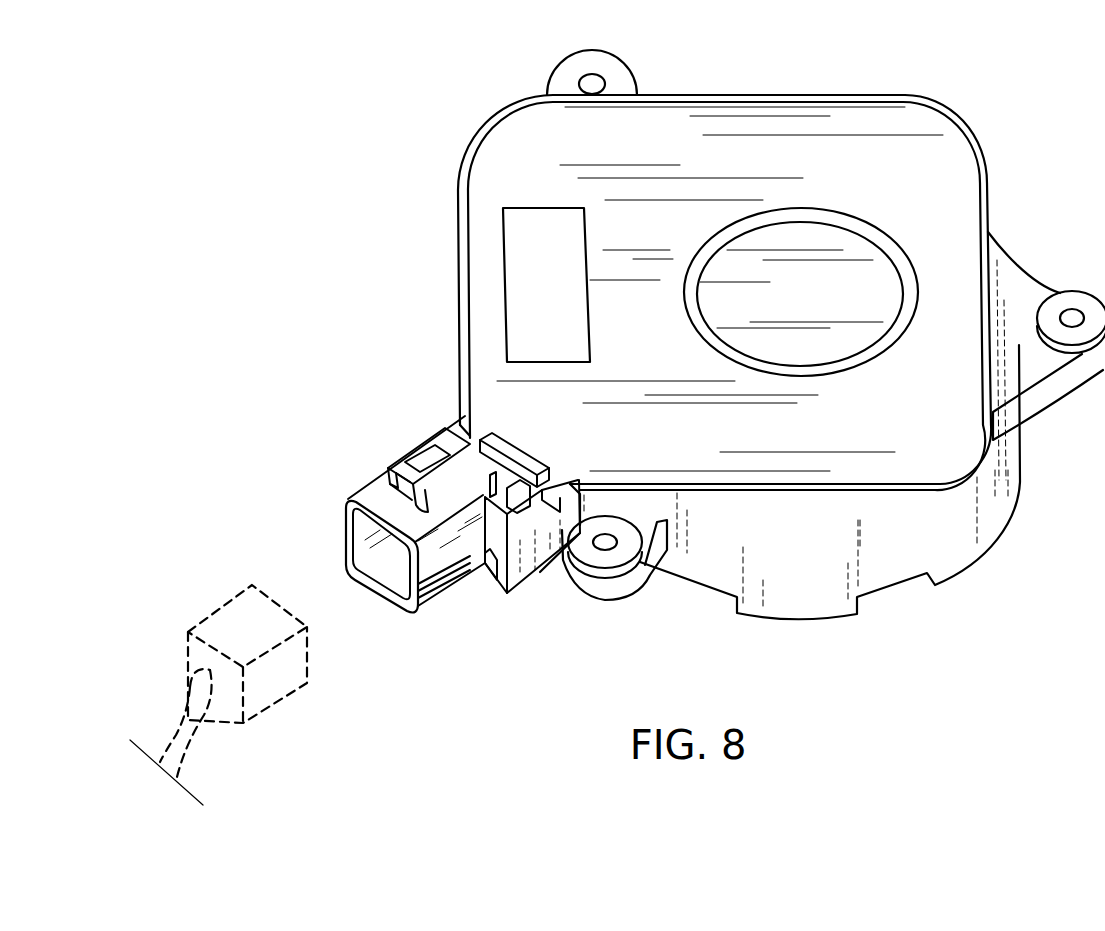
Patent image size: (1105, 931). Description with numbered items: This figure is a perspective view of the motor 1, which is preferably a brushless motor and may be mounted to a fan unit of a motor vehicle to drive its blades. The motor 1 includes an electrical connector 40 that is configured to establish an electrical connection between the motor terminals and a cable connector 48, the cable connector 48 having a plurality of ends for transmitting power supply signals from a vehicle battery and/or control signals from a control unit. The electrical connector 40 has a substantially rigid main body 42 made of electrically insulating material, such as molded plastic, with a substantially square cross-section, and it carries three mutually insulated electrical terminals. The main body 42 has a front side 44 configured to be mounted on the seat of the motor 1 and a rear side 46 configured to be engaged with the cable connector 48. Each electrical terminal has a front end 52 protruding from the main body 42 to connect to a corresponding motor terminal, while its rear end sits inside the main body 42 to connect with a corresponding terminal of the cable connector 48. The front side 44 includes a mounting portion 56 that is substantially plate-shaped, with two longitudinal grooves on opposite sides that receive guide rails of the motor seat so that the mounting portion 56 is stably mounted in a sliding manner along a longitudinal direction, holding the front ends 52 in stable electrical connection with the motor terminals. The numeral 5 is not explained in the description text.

The motor 1 is at (829, 94).
The cover 5 is at (950, 166).
The electrical connector 40 is at (358, 491).
The main body 42 is at (400, 511).
The front side 44 is at (487, 567).
The rear side 46 is at (392, 574).
The cable connector 48 is at (212, 607).
The front end 52 is at (440, 438).
The mounting portion 56 is at (487, 587).